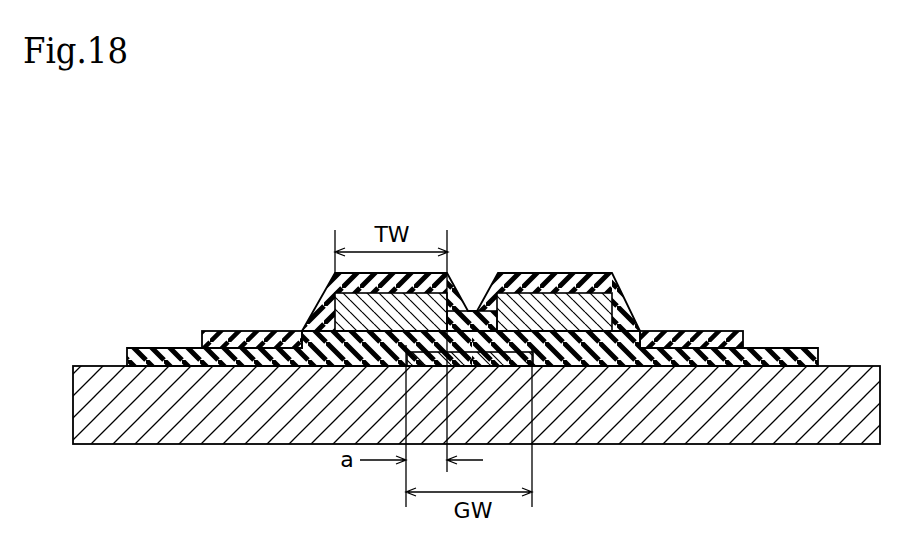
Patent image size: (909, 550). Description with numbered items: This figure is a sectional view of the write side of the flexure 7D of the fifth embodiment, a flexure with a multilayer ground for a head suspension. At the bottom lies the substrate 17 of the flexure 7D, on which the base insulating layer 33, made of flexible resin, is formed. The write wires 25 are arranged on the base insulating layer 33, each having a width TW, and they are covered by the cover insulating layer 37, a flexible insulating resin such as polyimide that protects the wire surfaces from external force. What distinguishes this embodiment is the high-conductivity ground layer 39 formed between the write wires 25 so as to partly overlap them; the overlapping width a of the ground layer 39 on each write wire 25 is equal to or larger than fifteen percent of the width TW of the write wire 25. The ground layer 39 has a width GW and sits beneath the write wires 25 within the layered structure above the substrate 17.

The flexure 7D is at (696, 264).
The substrate 17 is at (280, 400).
The write wires 25 is at (326, 303).
The base insulating layer 33 is at (785, 356).
The cover insulating layer 37 is at (460, 305).
The ground layer 39 is at (555, 362).